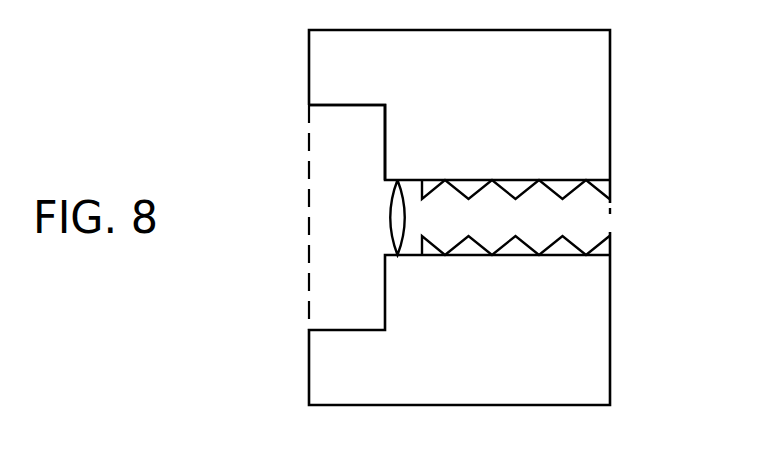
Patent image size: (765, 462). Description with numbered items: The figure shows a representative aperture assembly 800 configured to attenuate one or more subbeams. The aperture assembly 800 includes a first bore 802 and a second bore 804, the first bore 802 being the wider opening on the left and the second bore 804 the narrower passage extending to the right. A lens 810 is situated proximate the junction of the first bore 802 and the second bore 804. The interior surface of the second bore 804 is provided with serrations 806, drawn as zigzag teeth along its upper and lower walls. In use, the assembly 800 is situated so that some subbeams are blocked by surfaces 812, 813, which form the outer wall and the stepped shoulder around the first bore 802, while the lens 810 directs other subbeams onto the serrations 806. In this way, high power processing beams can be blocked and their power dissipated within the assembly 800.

The aperture assembly 800 is at (562, 80).
The first bore 802 is at (362, 228).
The second bore 804 is at (603, 217).
The serrations 806 is at (422, 237).
The lens 810 is at (393, 233).
The surface 812 is at (309, 82).
The surface 813 is at (385, 148).